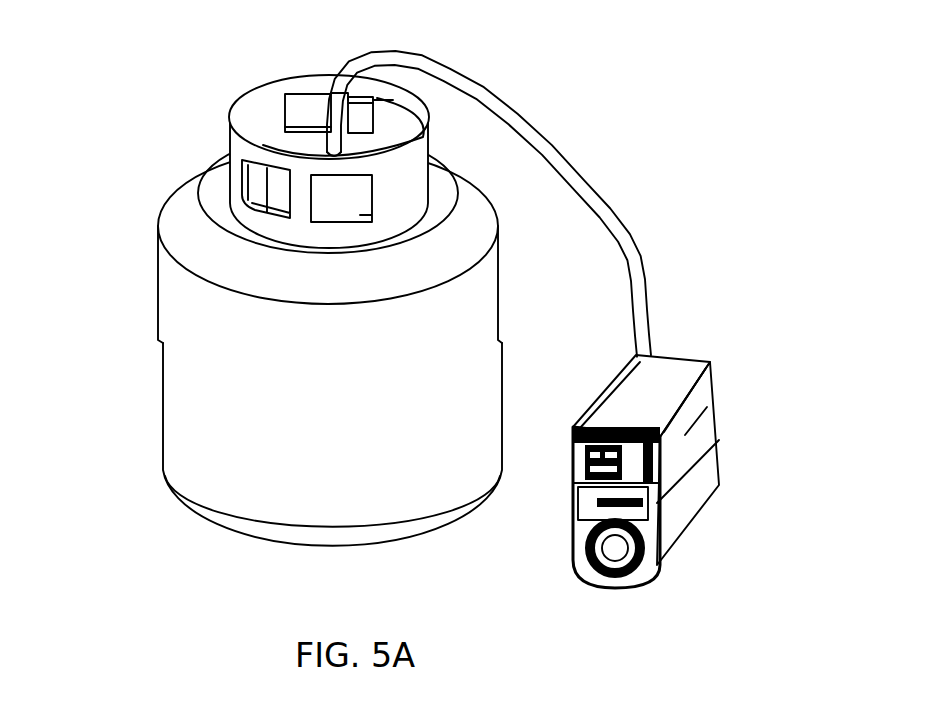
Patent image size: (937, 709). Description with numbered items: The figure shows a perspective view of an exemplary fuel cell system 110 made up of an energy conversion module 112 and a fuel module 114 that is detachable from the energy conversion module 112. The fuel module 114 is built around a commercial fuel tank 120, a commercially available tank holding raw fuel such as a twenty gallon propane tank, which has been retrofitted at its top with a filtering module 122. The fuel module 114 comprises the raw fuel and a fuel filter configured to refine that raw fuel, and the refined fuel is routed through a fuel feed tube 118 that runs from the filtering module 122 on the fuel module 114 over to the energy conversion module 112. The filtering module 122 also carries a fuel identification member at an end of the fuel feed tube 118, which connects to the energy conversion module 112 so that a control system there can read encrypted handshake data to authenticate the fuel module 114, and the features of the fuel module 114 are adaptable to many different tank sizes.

The fuel cell system 110 is at (150, 75).
The energy conversion module 112 is at (713, 392).
The fuel module 114 is at (190, 93).
The fuel feed tube 118 is at (567, 163).
The commercial fuel tank 120 is at (408, 487).
The filtering module 122 is at (302, 142).